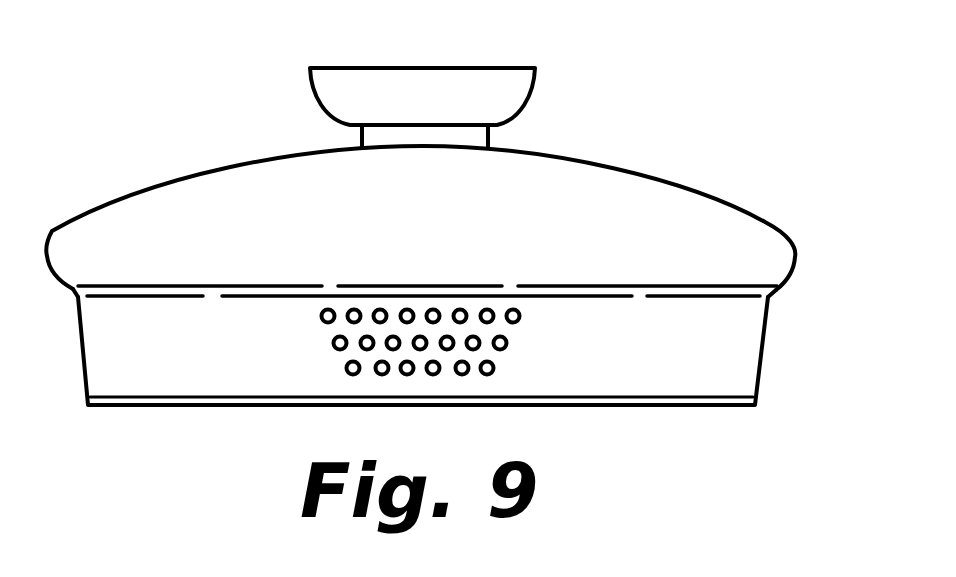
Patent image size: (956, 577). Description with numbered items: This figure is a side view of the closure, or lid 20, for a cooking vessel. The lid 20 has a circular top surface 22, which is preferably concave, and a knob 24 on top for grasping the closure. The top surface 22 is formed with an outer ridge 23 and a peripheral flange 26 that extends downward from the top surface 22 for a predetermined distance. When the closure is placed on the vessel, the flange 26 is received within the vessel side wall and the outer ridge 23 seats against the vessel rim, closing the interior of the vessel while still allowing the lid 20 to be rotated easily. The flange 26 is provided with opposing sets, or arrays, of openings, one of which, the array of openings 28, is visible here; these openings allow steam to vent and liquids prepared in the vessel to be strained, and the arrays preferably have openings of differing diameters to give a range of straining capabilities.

The lid 20 is at (662, 138).
The top surface 22 is at (483, 240).
The outer ridge 23 is at (768, 293).
The knob 24 is at (472, 67).
The peripheral flange 26 is at (652, 380).
The array of openings 28 is at (310, 346).